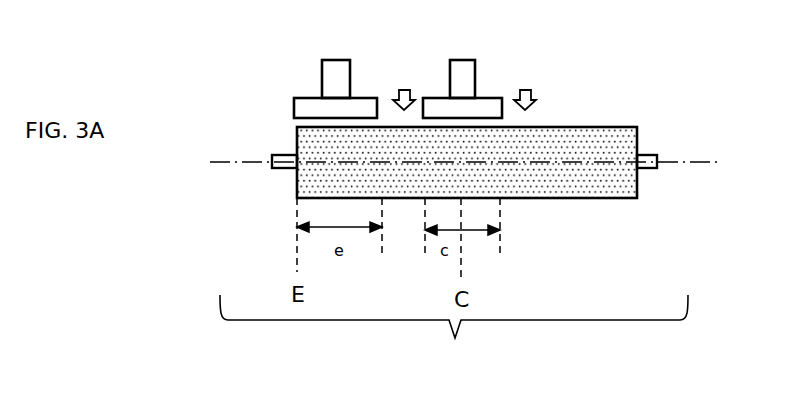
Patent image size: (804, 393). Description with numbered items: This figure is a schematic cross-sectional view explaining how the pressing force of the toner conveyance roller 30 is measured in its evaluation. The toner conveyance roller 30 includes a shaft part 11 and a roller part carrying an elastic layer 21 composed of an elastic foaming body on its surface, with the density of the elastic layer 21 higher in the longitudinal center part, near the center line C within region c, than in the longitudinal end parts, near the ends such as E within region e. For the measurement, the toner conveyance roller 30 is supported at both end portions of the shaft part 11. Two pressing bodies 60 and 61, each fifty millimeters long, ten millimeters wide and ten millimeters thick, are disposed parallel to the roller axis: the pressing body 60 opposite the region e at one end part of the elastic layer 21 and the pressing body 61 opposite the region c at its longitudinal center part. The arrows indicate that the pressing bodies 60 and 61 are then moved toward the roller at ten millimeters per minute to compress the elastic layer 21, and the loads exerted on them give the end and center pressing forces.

The shaft part 11 is at (280, 170).
The elastic layer 21 is at (613, 183).
The toner conveyance roller 30 is at (454, 341).
The pressing body 60 is at (328, 65).
The pressing body 61 is at (455, 70).